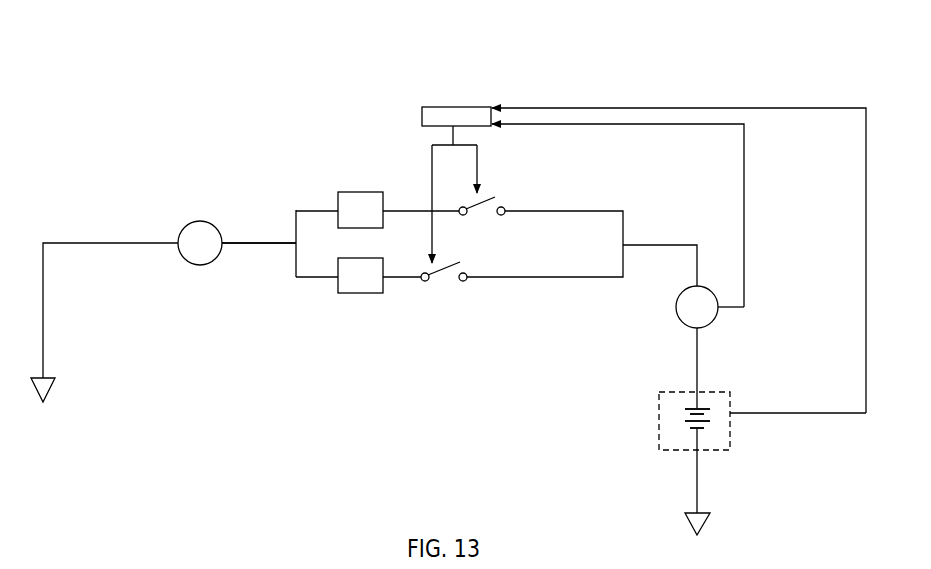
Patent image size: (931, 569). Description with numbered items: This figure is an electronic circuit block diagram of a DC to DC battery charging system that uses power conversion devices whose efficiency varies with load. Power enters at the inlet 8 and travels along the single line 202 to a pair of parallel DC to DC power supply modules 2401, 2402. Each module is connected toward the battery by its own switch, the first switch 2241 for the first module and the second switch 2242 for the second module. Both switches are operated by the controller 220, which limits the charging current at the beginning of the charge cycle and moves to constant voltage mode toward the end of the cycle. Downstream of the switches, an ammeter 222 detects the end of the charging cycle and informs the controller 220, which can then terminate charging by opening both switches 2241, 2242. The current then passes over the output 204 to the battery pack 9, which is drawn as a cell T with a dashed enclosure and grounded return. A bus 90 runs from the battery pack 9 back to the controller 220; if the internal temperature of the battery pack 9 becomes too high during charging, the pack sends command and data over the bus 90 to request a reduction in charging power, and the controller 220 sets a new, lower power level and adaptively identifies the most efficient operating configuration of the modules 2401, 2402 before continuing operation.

The inlet 8 is at (192, 221).
The single output 202 is at (257, 243).
The first power supply module 2401 is at (340, 192).
The second power supply module 2402 is at (378, 293).
The first switch 2241 is at (495, 197).
The second switch 2242 is at (443, 270).
The controller 220 is at (440, 107).
The bus 90 is at (638, 108).
The ammeter 222 is at (717, 315).
The output 204 is at (697, 377).
The battery pack 9 is at (685, 420).
The battery cell T is at (730, 420).